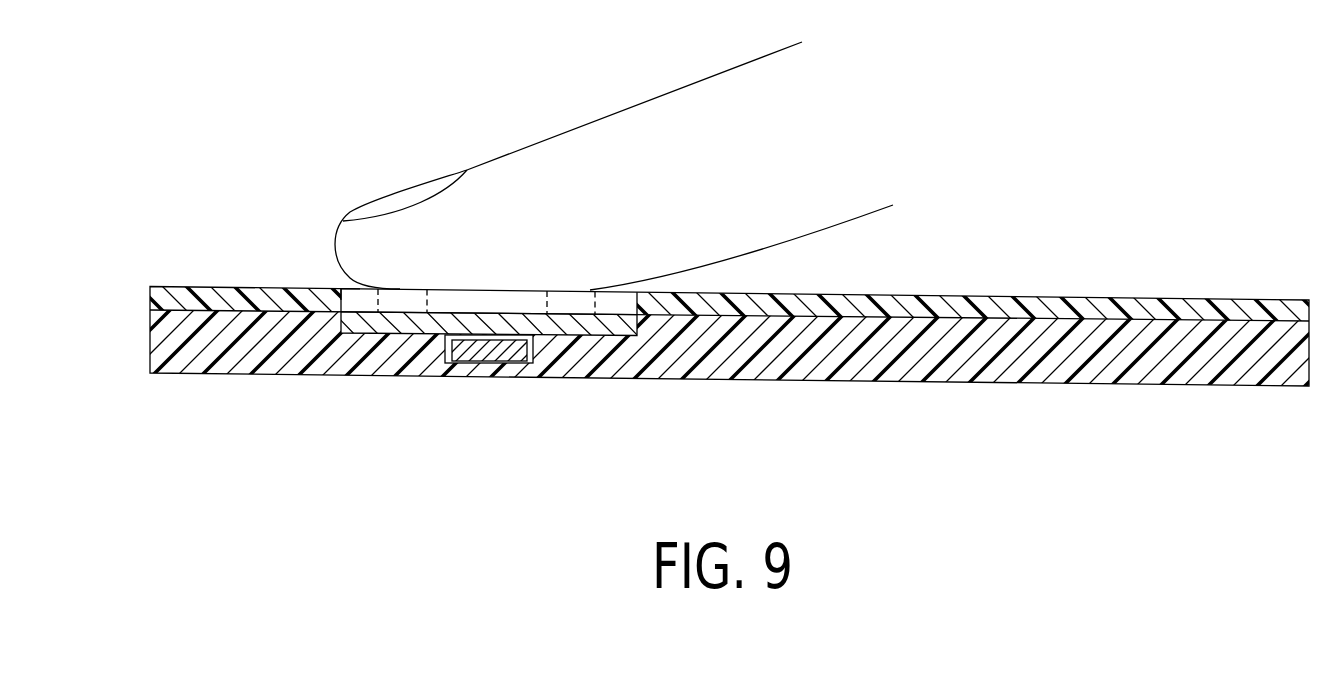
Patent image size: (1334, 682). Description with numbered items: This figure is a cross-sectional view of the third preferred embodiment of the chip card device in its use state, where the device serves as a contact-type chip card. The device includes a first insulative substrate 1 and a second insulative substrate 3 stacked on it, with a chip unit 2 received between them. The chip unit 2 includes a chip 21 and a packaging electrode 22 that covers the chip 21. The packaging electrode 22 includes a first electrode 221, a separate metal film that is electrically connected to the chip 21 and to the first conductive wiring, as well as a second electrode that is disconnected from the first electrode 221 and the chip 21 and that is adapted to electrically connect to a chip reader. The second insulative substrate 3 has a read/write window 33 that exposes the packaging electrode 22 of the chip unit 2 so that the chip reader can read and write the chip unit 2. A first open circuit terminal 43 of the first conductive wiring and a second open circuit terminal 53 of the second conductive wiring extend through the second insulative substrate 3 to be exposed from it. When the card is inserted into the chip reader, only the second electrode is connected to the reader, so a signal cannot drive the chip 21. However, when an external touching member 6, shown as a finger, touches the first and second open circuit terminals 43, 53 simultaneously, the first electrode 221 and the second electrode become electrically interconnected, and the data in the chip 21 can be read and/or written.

The first insulative substrate 1 is at (162, 337).
The chip unit 2 is at (424, 361).
The chip 21 is at (481, 356).
The packaging electrode 22 is at (492, 312).
The first electrode 221 is at (547, 325).
The second insulative substrate 3 is at (162, 298).
The read/write window 33 is at (353, 298).
The first open circuit terminal 43 is at (407, 297).
The second open circuit terminal 53 is at (571, 292).
The external touching member 6 is at (707, 112).